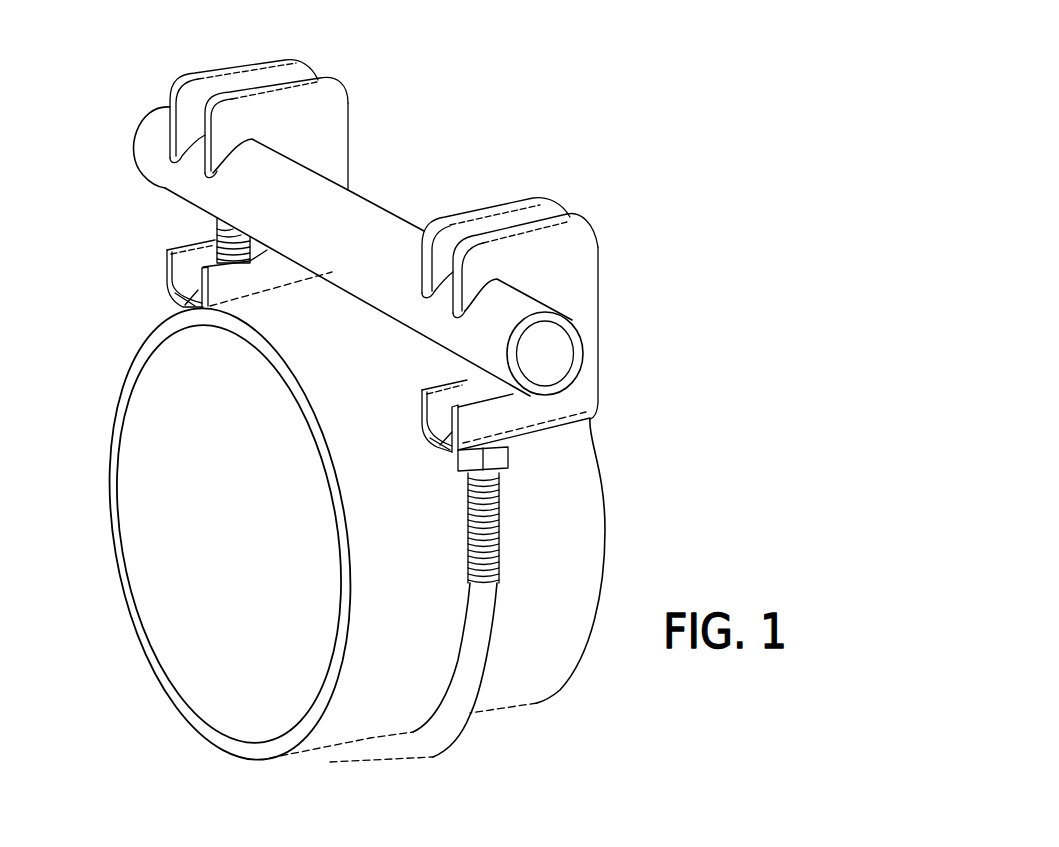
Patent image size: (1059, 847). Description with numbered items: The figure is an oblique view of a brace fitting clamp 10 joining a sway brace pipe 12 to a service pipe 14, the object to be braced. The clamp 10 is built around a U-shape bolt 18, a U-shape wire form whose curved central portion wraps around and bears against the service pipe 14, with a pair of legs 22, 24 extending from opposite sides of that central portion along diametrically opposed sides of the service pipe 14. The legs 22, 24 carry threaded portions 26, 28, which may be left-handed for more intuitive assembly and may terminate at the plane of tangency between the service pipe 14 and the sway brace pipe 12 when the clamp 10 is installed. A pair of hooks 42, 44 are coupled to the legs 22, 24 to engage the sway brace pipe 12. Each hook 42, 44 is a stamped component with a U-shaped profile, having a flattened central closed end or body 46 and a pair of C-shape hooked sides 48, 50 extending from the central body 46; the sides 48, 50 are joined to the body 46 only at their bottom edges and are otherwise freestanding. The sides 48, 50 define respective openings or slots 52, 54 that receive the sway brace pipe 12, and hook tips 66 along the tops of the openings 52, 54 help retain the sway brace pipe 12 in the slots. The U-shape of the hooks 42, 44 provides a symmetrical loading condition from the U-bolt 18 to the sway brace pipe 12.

The clamp 10 is at (140, 72).
The sway brace pipe 12 is at (135, 127).
The service pipe 14 is at (222, 758).
The U-shape bolt 18 is at (441, 756).
The leg 22 is at (205, 226).
The leg 24 is at (508, 563).
The threaded portion 26 is at (214, 240).
The threaded portion 28 is at (506, 505).
The hook 42 is at (383, 209).
The hook 44 is at (590, 204).
The central body 46 is at (176, 305).
The hooked side 48 is at (266, 68).
The hooked side 50 is at (318, 95).
The slot 52 is at (160, 251).
The slot 54 is at (458, 501).
The hook tip 66 is at (210, 175).